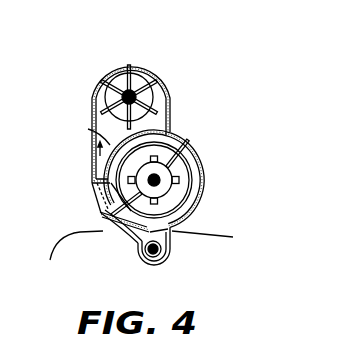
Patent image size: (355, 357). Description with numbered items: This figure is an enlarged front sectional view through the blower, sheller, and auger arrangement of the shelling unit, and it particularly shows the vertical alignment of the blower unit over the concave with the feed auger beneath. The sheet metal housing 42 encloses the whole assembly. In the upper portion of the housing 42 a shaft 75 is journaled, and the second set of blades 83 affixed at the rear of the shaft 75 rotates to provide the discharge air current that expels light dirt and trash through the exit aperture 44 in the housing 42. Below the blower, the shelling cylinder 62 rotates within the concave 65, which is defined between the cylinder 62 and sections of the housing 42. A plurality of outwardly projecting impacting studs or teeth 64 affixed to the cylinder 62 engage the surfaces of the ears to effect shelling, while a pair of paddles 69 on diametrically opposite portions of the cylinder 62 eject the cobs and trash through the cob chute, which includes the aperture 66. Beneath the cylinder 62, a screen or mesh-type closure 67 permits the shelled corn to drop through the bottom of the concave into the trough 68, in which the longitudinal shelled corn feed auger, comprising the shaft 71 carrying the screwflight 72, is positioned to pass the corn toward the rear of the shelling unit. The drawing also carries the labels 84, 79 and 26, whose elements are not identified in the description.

The housing 42 is at (84, 115).
The aperture 44 is at (85, 126).
The duct inner wall 84 is at (95, 171).
The second set of blades 83 is at (150, 72).
The shaft 75 is at (160, 90).
The concave 65 is at (178, 138).
The shelling cylinder 62 is at (185, 152).
The paddles 69 is at (197, 172).
The impacting studs or teeth 64 is at (178, 184).
The aperture 66 is at (98, 203).
The screen or mesh-type closure 67 is at (117, 229).
The bottom wall 79 is at (138, 247).
The trough 68 is at (150, 264).
The shaft 71 is at (165, 263).
The screwflight 72 is at (163, 247).
The body 26 is at (345, 352).